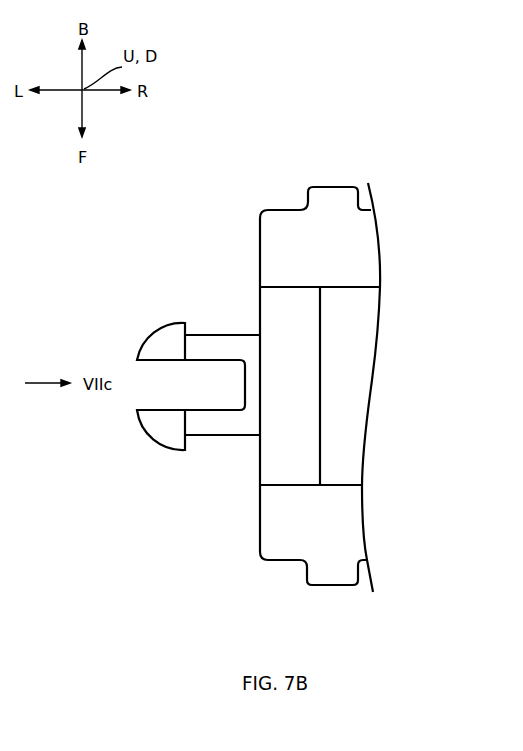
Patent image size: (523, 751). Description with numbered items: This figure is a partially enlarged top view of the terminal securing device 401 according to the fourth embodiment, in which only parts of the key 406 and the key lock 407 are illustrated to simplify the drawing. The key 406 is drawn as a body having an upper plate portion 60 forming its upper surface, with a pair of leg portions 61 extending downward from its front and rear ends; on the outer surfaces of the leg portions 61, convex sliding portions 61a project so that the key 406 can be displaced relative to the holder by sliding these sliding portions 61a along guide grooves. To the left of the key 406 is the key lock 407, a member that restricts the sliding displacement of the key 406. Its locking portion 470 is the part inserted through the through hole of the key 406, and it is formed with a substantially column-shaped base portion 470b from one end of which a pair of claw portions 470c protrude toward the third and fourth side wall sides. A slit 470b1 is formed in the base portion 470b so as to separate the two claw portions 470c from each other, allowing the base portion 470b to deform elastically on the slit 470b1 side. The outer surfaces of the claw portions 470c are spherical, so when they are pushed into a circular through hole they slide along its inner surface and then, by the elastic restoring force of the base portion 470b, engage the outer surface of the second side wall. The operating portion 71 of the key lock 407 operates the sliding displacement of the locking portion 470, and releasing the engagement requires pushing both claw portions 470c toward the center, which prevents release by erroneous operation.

The terminal securing device 401 is at (217, 100).
The key 406 is at (252, 193).
The key lock 407 is at (193, 278).
The locking portion 470 is at (156, 370).
The base portion 470b is at (220, 345).
The slit 470b1 is at (153, 411).
The claw portions 470c is at (167, 342).
The leg portions 61 is at (348, 382).
The sliding portions 61a is at (335, 197).
The upper plate portion 60 is at (367, 272).
The operating portion 71 is at (357, 380).